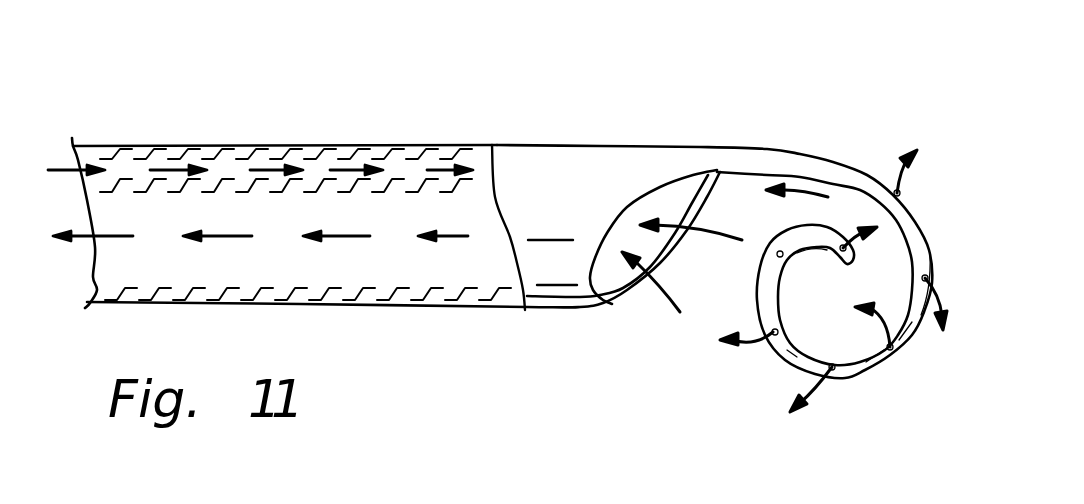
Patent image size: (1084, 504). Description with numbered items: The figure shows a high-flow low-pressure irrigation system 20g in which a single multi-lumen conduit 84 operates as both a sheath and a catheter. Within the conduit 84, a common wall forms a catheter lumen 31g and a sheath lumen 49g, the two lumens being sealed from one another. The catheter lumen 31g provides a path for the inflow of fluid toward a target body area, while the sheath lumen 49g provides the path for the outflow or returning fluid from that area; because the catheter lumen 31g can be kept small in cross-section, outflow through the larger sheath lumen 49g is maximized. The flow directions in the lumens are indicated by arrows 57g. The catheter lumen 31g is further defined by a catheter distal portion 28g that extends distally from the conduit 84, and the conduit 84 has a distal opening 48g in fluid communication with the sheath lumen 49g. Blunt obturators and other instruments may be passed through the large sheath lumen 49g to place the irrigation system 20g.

The high-flow low-pressure irrigation system 20g is at (686, 140).
The catheter distal portion 28g is at (847, 163).
The catheter lumen 31g is at (317, 160).
The sheath lumen 49g is at (283, 268).
The flow channels 57g is at (223, 228).
The multi-lumen conduit 84 is at (558, 175).
The distal opening 48g is at (612, 268).